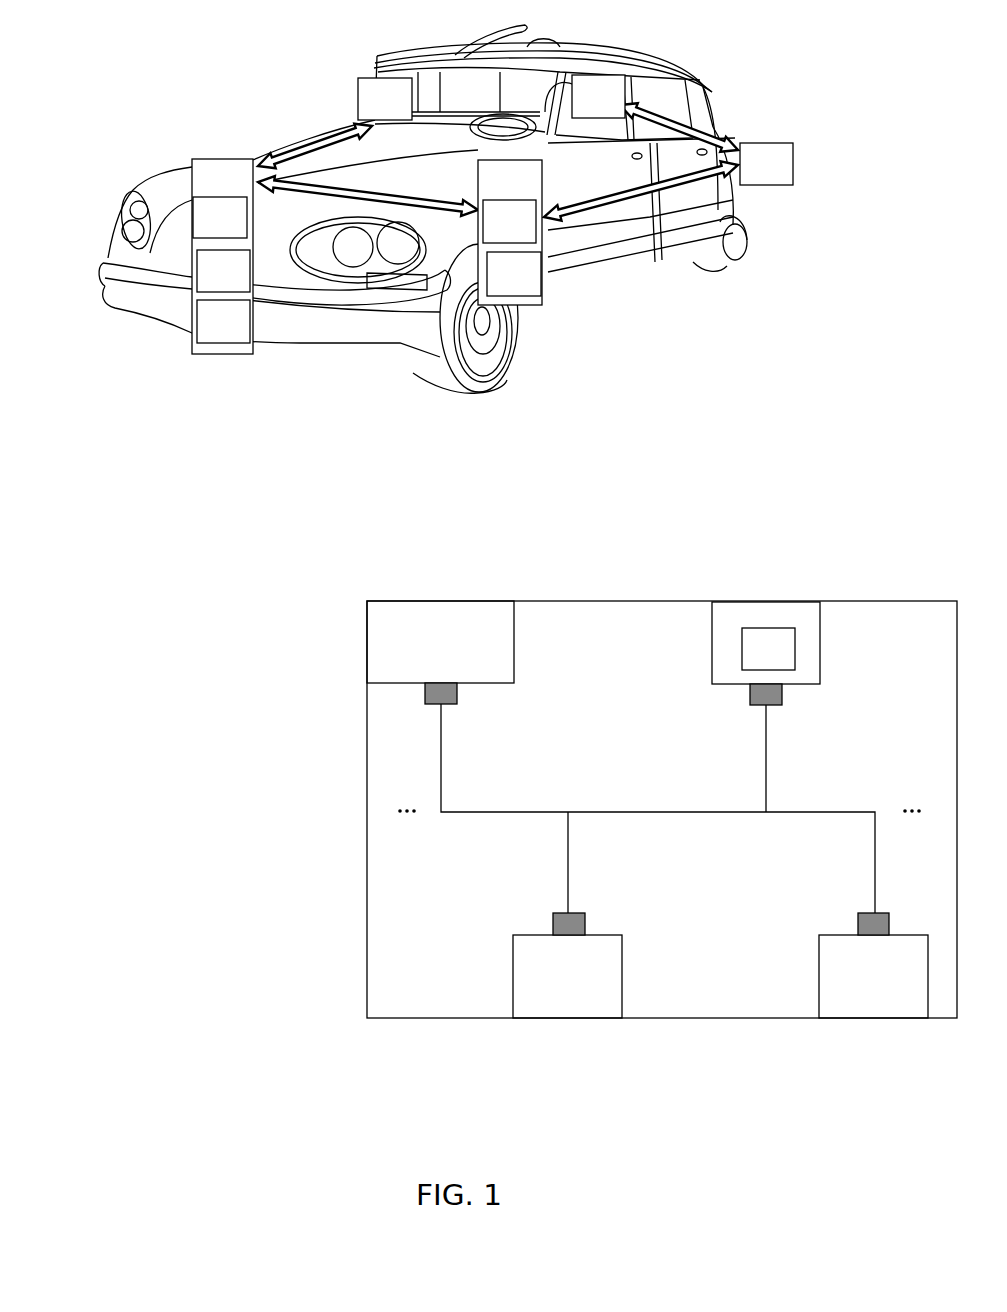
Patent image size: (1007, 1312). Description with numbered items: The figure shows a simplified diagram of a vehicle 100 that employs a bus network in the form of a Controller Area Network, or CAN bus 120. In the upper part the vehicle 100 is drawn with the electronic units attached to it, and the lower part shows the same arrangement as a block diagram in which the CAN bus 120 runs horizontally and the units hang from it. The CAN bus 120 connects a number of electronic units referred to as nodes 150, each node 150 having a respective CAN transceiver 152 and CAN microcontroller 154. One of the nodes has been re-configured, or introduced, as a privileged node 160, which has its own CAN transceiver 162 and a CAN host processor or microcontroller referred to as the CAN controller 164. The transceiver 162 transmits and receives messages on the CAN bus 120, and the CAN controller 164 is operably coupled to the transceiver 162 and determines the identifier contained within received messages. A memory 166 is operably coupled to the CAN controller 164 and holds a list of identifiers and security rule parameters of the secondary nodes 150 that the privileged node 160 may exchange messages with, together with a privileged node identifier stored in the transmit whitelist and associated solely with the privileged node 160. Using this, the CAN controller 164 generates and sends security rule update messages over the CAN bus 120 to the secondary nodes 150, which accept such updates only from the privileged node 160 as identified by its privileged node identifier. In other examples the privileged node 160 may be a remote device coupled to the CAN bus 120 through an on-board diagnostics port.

The vehicle 100 is at (97, 88).
The CAN bus 120 is at (263, 157).
The node 150 is at (710, 655).
The CAN transceiver 152 is at (745, 695).
The CAN microcontroller 154 is at (532, 286).
The privileged node 160 is at (514, 632).
The CAN transceiver 162 is at (422, 694).
The CAN controller 164 is at (243, 284).
The memory 166 is at (242, 334).